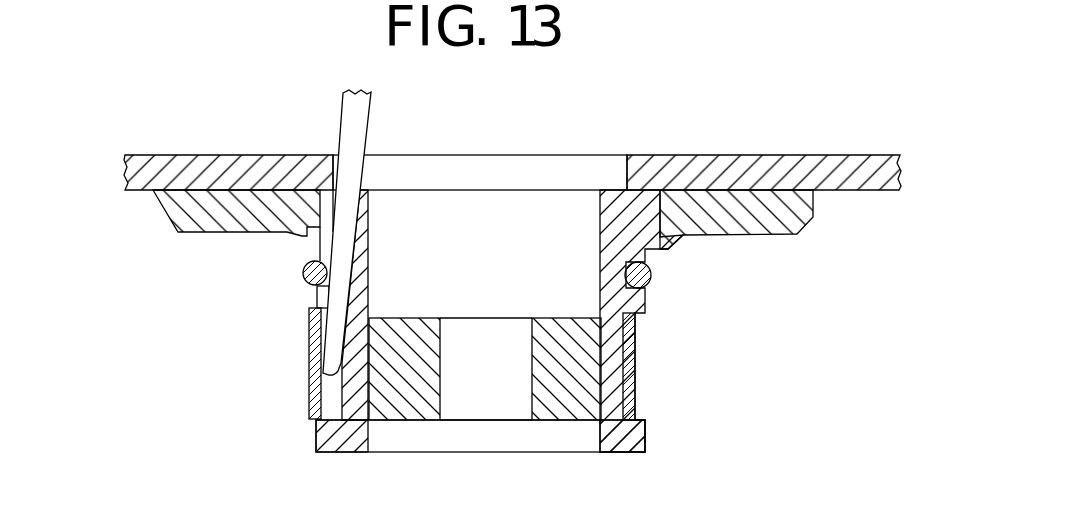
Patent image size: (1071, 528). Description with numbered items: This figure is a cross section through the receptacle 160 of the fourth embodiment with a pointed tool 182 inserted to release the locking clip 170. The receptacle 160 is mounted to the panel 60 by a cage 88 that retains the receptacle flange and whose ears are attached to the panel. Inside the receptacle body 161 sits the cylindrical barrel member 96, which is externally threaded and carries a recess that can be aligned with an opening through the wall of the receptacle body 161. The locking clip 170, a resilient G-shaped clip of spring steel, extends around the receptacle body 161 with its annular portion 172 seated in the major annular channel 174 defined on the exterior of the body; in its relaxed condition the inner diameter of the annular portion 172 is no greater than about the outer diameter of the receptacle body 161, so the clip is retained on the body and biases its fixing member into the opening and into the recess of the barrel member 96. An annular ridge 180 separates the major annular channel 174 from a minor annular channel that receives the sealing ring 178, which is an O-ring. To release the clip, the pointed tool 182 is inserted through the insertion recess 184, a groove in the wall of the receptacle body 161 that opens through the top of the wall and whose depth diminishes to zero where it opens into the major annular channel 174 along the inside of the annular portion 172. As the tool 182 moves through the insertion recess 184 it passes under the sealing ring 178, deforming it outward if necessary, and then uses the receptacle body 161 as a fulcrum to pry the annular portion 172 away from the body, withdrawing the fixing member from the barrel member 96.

The panel 60 is at (140, 191).
The cage 88 is at (795, 224).
The barrel member 96 is at (575, 314).
The receptacle 160 is at (310, 440).
The receptacle body 161 is at (645, 443).
The locking clip 170 is at (645, 375).
The annular portion 172 is at (309, 384).
The major annular channel 174 is at (637, 421).
The sealing ring 178 is at (304, 277).
The annular ridge 180 is at (645, 301).
The pointed tool 182 is at (357, 120).
The insertion recess 184 is at (316, 249).